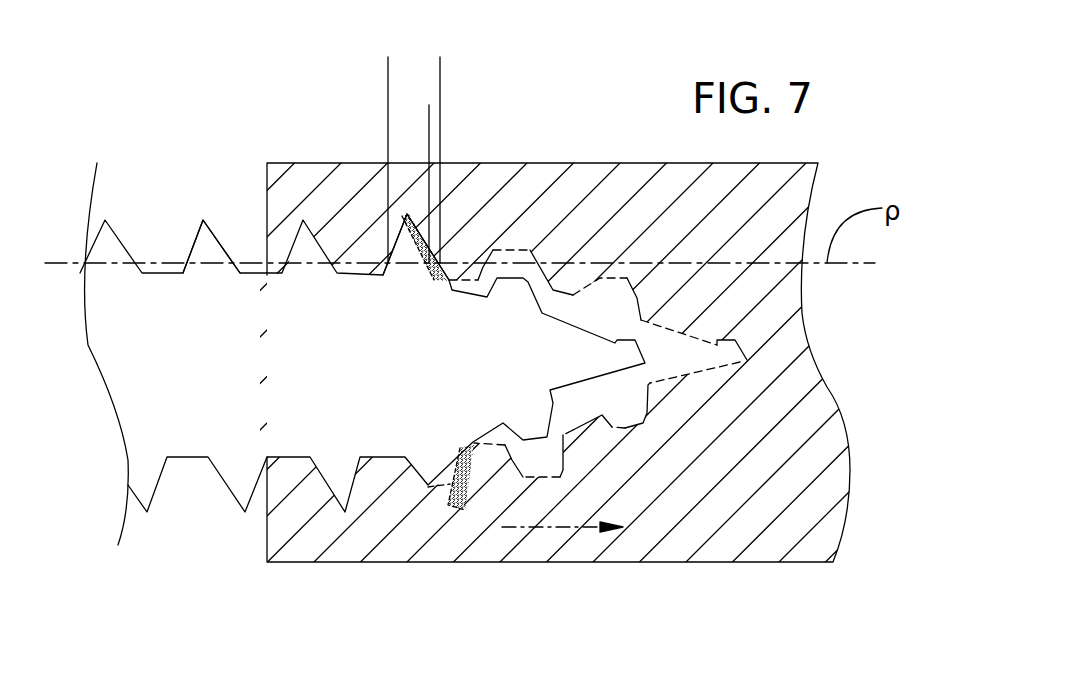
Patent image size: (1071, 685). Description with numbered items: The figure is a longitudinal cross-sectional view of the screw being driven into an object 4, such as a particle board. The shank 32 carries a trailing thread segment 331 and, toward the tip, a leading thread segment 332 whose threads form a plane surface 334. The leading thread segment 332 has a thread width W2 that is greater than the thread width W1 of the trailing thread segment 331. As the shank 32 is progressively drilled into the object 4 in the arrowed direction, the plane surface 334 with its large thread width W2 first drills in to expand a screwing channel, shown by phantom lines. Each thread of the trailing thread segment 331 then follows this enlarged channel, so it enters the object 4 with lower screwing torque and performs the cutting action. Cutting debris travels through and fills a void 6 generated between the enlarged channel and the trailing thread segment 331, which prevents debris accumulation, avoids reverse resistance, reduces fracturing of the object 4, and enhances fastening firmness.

The object 4 is at (685, 562).
The void 6 is at (457, 498).
The shank 32 is at (213, 382).
The trailing thread segment 331 is at (204, 220).
The leading thread segment 332 is at (371, 247).
The plane surface 334 is at (513, 277).
The thread width W1 is at (429, 112).
The thread width W2 is at (440, 63).